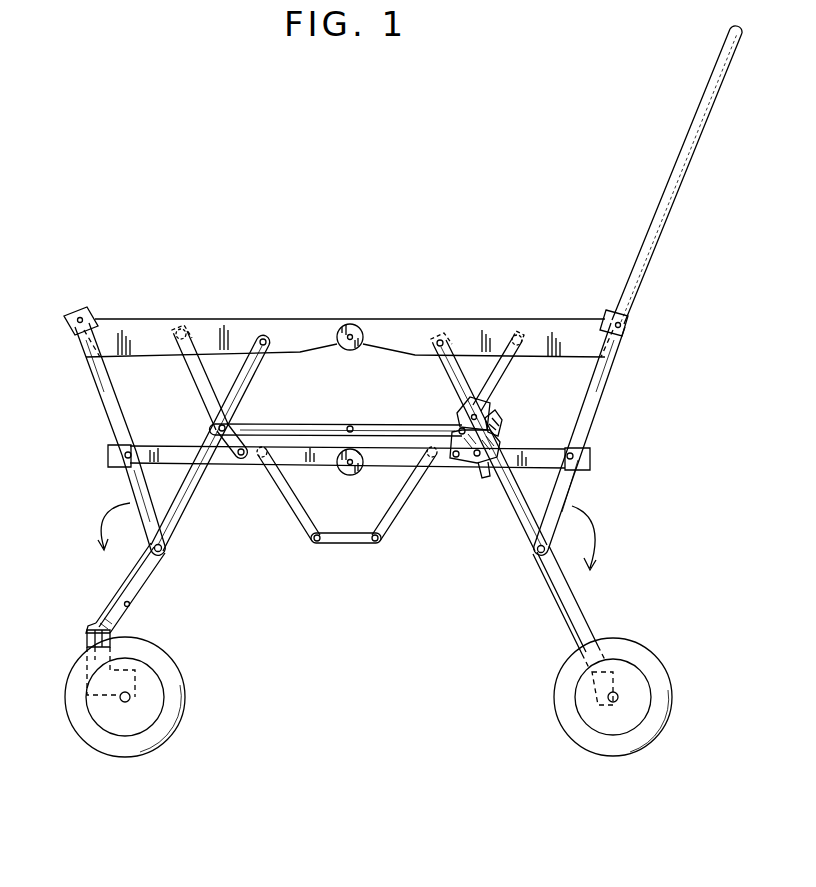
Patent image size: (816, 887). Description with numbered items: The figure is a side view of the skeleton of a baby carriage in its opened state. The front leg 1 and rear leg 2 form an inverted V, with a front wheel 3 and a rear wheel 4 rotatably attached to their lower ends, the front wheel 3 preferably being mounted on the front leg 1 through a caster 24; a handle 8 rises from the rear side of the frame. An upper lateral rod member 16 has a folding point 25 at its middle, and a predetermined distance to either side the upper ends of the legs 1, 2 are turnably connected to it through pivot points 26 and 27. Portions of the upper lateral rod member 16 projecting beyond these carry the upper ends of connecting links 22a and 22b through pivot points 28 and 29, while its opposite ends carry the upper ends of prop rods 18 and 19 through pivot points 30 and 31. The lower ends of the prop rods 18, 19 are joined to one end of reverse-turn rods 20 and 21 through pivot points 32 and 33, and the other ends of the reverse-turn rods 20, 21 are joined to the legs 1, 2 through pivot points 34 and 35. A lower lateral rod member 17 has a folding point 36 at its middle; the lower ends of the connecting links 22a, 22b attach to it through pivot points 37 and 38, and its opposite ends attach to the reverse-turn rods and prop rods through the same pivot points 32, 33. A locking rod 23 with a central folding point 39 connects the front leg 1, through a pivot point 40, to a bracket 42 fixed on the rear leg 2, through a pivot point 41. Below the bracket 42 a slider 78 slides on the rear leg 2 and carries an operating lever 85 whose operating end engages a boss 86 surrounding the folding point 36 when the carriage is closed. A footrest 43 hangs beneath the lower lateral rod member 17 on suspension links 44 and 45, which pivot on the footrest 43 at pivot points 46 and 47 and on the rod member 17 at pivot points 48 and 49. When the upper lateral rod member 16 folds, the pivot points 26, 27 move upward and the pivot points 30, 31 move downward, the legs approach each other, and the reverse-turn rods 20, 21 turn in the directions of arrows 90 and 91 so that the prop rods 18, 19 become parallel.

The front leg 1 is at (142, 585).
The rear leg 2 is at (578, 606).
The front wheel 3 is at (176, 716).
The rear wheel 4 is at (668, 690).
The handle 8 is at (705, 86).
The upper lateral rod member 16 is at (465, 318).
The lower lateral rod member 17 is at (580, 441).
The prop rod 18 is at (96, 383).
The prop rod 19 is at (598, 406).
The reverse-turn rod 20 is at (134, 481).
The reverse-turn rod 21 is at (560, 496).
The connecting link 22a is at (192, 368).
The connecting link 22b is at (500, 386).
The locking rod 23 is at (288, 422).
The caster 24 is at (87, 636).
The folding point 25 is at (351, 335).
The pivot point 26 is at (265, 338).
The pivot point 27 is at (440, 339).
The pivot point 28 is at (181, 328).
The pivot point 29 is at (520, 335).
The pivot point 30 is at (82, 316).
The pivot point 31 is at (624, 326).
The pivot point 32 is at (108, 455).
The pivot point 33 is at (590, 458).
The pivot point 34 is at (164, 548).
The pivot point 35 is at (538, 551).
The folding point 36 is at (345, 471).
The pivot point 37 is at (238, 462).
The pivot point 38 is at (458, 466).
The folding point 39 is at (350, 425).
The pivot point 40 is at (216, 427).
The pivot point 41 is at (458, 430).
The bracket 42 is at (464, 408).
The footrest 43 is at (346, 545).
The suspension link 44 is at (284, 503).
The suspension link 45 is at (396, 515).
The pivot point 46 is at (316, 543).
The pivot point 47 is at (375, 543).
The pivot point 48 is at (262, 458).
The pivot point 49 is at (432, 460).
The slider 78 is at (490, 438).
The operating lever 85 is at (485, 476).
The boss 86 is at (359, 471).
The arrow 90 is at (95, 529).
The arrow 91 is at (613, 538).